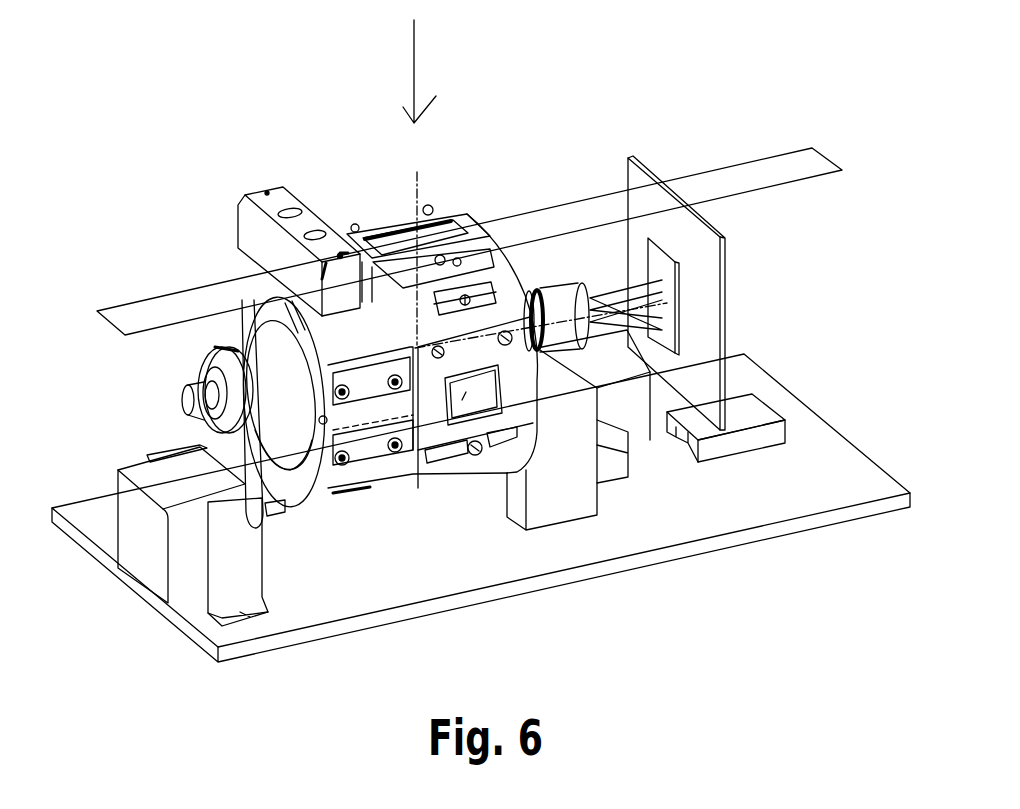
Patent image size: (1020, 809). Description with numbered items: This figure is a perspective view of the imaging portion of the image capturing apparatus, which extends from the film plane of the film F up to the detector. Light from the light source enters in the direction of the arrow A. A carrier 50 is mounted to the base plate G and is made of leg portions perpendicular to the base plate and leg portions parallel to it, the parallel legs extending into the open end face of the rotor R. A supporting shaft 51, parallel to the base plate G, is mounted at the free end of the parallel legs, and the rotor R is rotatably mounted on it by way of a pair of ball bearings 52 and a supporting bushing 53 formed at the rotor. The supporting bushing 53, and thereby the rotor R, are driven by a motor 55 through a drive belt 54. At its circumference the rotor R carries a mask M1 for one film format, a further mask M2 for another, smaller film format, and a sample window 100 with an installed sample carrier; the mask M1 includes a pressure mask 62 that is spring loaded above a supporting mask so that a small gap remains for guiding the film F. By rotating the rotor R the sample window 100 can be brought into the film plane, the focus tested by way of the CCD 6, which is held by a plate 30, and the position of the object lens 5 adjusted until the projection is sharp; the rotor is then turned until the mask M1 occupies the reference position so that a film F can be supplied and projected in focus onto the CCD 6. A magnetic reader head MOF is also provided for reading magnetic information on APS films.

The arrow A is at (419, 182).
The base plate G is at (847, 492).
The motor 55 is at (133, 492).
The drive belt 54 is at (225, 443).
The supporting shaft 51 is at (197, 387).
The supporting bushing 53 is at (284, 401).
The film F is at (113, 312).
The magnetic reader head MOF is at (253, 227).
The pressure mask 62 is at (466, 214).
The mask M1 is at (400, 245).
The sample window 100 is at (495, 297).
The ball bearings 52 is at (522, 397).
The further mask M2 is at (462, 400).
The carrier 50 is at (570, 505).
The rotor R is at (508, 456).
The object lens 5 is at (553, 293).
The CCD 6 is at (660, 265).
The plate 30 is at (705, 290).